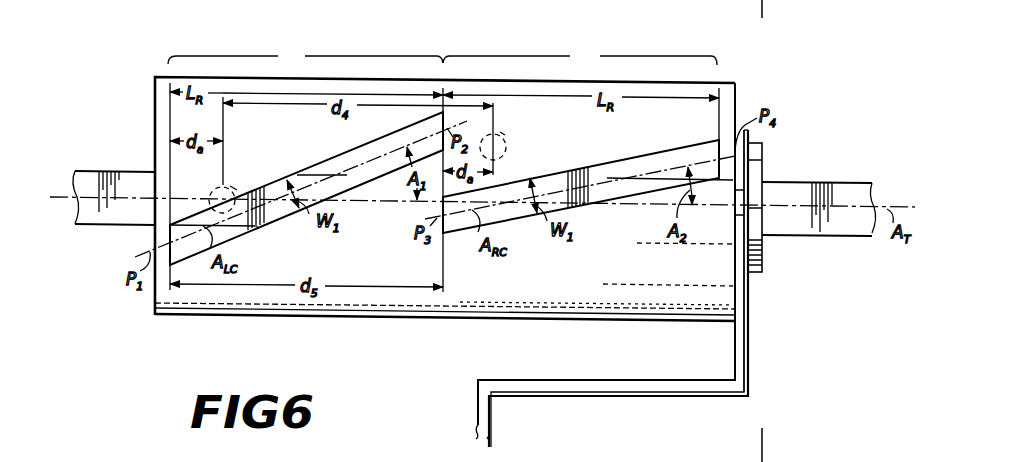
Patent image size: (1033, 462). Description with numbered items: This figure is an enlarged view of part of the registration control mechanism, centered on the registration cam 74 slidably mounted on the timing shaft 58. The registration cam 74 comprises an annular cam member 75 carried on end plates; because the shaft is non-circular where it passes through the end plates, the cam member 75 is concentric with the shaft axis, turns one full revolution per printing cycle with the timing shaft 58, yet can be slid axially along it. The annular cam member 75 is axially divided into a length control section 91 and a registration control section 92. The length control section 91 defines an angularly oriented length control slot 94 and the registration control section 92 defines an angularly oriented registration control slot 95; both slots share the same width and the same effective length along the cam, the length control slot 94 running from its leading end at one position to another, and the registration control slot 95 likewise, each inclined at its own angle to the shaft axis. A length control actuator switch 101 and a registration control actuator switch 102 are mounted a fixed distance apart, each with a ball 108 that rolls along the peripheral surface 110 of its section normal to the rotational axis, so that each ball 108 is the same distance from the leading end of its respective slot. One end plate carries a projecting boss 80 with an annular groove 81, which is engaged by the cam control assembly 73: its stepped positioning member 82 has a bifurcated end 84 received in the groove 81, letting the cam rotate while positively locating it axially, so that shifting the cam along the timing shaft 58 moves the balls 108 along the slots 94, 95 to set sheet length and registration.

The timing shaft 58 is at (844, 187).
The cam control assembly 73 is at (571, 397).
The registration cam 74 is at (227, 314).
The annular cam member 75 is at (278, 315).
The projecting boss 80 is at (763, 145).
The annular groove 81 is at (751, 172).
The stepped positioning member 82 is at (631, 387).
The bifurcated end 84 is at (740, 204).
The length control section 91 is at (305, 57).
The registration control section 92 is at (580, 61).
The length control slot 94 is at (332, 158).
The registration control slot 95 is at (628, 160).
The length control actuator switch 101 is at (252, 175).
The registration control actuator switch 102 is at (505, 134).
The ball 108 is at (216, 190).
The peripheral surface 110 is at (586, 290).